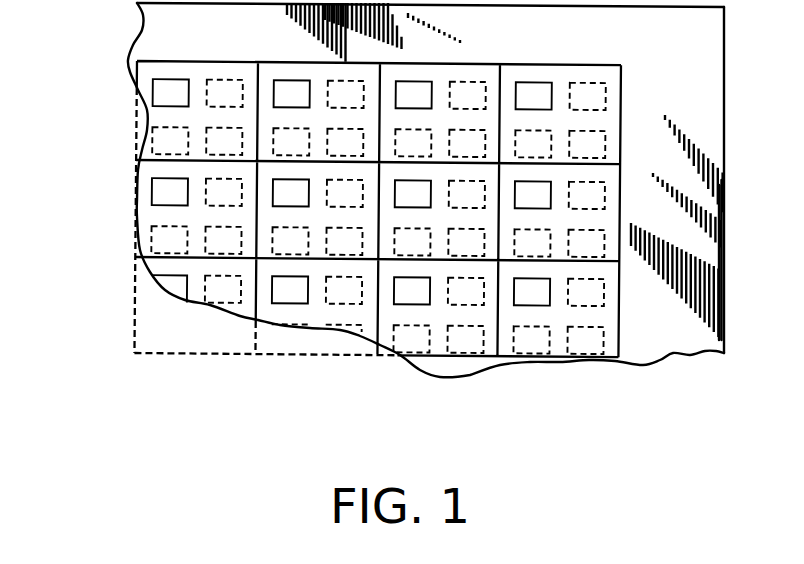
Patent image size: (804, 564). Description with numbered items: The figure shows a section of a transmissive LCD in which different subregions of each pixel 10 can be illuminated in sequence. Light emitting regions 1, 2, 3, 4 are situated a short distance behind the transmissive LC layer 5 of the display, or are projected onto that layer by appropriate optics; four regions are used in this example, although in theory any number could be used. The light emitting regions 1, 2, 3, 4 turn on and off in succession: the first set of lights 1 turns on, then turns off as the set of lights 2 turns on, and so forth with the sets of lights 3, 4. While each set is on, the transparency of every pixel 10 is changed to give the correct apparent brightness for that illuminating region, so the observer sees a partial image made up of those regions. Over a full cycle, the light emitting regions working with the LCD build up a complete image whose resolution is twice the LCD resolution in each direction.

The transmissive LC layer 5 is at (128, 72).
The pixel 10 is at (330, 253).
The light emitting region 1 is at (292, 93).
The light emitting region 2 is at (346, 94).
The light emitting region 3 is at (291, 141).
The light emitting region 4 is at (345, 142).